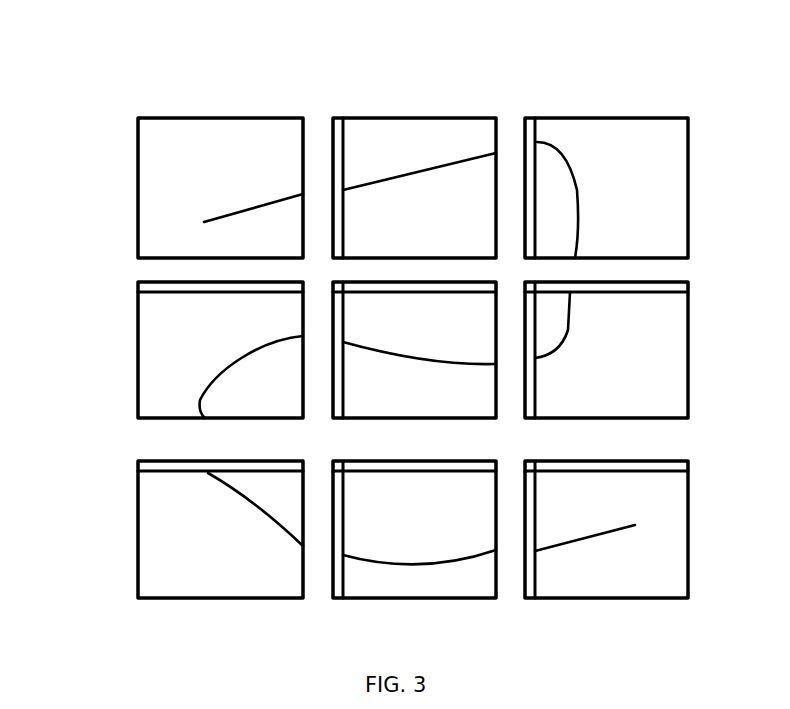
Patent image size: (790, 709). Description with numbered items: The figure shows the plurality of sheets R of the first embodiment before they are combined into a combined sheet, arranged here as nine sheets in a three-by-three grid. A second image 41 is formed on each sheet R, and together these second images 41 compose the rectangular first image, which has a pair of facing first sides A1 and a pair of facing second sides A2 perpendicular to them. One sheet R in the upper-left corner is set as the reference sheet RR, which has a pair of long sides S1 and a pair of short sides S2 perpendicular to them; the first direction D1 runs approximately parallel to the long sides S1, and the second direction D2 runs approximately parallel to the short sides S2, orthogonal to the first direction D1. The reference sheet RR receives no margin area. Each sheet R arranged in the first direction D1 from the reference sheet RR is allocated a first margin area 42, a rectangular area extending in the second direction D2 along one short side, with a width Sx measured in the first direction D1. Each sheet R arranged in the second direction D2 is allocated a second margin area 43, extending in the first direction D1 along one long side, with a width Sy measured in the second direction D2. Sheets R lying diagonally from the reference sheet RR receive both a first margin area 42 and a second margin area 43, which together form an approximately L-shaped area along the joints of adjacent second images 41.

The second image 41 is at (260, 140).
The first margin area 42 is at (338, 138).
The second margin area 43 is at (158, 286).
The sheet R is at (465, 135).
The reference sheet RR is at (168, 140).
The long side S1 is at (188, 124).
The short side S2 is at (143, 220).
The first direction D1 is at (228, 62).
The second direction D2 is at (96, 178).
The width of the first margin area Sx is at (535, 118).
The width of the second margin area Sy is at (138, 282).
The first side A1 is at (632, 121).
The second side A2 is at (140, 540).